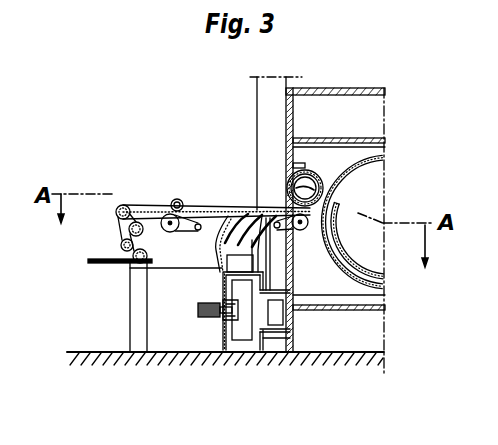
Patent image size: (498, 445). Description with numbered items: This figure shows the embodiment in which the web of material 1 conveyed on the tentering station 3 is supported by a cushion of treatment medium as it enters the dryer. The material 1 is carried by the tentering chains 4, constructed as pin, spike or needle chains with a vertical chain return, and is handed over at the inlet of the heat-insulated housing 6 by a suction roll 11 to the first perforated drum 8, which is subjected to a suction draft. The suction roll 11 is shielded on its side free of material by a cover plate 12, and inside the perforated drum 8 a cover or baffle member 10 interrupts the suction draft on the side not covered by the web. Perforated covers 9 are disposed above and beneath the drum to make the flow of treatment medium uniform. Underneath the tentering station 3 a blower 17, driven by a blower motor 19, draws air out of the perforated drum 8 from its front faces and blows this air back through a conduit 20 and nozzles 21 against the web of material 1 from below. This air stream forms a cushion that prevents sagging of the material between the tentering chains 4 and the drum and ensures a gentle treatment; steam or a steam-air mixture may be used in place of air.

The web-shaped material 1 is at (96, 264).
The tentering station 3 is at (174, 233).
The tentering chains 4 is at (204, 234).
The heat-insulated housing 6 is at (341, 88).
The perforated drum 8 is at (332, 265).
The perforated covers 9 is at (348, 138).
The cover or baffle member 10 is at (345, 267).
The suction roll 11 is at (286, 185).
The cover plate 12 is at (319, 174).
The blower 17 is at (244, 342).
The blower motor 19 is at (207, 318).
The conduit 20 is at (232, 264).
The nozzles 21 is at (280, 210).